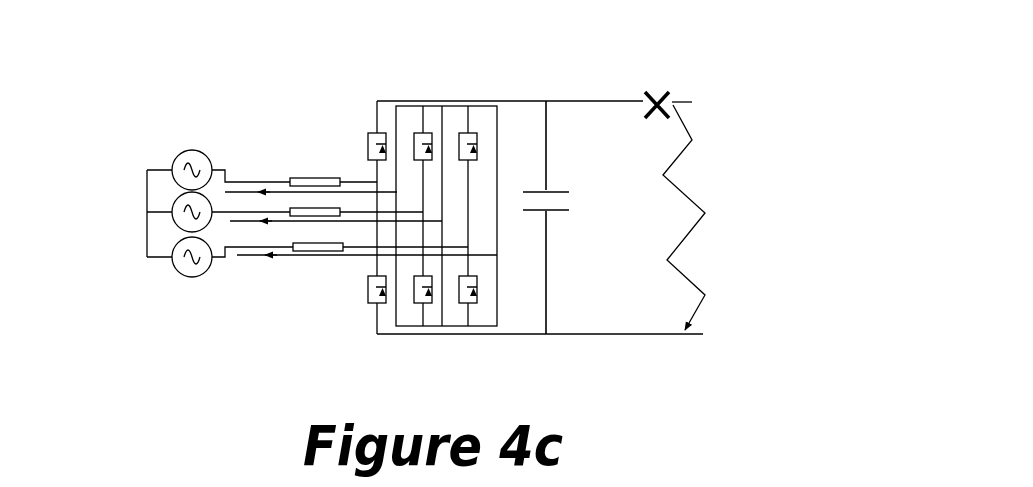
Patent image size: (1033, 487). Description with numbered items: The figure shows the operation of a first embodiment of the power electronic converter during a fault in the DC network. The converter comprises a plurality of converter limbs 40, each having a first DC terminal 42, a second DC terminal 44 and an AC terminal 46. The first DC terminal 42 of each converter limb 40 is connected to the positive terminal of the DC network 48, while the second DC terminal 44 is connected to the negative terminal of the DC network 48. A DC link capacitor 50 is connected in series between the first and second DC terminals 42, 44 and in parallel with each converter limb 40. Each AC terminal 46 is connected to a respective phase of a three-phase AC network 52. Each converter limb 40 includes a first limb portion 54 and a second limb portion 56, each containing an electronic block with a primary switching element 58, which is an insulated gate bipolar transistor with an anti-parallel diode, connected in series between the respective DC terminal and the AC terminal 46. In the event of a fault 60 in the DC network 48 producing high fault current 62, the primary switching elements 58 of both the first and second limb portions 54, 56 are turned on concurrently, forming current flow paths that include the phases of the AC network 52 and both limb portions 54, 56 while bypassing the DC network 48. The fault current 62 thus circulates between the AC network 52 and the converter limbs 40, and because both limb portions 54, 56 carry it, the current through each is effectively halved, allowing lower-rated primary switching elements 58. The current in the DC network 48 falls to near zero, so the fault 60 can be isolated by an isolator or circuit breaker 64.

The converter limb 40 is at (378, 85).
The first DC terminal 42 is at (546, 93).
The second DC terminal 44 is at (546, 342).
The AC terminal 46 is at (370, 175).
The DC network 48 is at (682, 83).
The DC link capacitor 50 is at (567, 203).
The three-phase AC network 52 is at (153, 155).
The first limb portion 54 is at (323, 125).
The second limb portion 56 is at (320, 305).
The primary switching element 58 is at (372, 122).
The fault 60 is at (703, 205).
The fault current 62 is at (248, 265).
The isolator or circuit breaker 64 is at (657, 90).